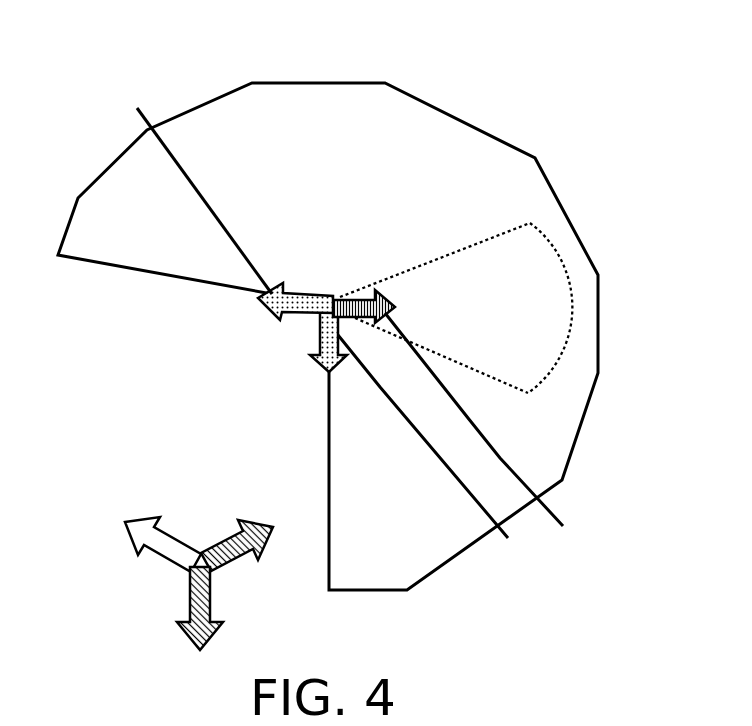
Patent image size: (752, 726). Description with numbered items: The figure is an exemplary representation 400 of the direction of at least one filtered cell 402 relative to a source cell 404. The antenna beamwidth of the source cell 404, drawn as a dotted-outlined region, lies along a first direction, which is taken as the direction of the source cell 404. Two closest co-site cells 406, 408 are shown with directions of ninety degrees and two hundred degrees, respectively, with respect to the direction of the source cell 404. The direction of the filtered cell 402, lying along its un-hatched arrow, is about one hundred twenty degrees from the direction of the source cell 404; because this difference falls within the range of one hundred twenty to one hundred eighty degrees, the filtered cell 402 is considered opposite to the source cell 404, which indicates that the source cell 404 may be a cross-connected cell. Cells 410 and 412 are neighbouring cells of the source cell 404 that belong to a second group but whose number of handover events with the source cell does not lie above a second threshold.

The exemplary representation 400 is at (582, 60).
The filtered cell 402 is at (160, 545).
The source cell 404 is at (563, 526).
The closest co-site cell 406 is at (508, 538).
The closest co-site cell 408 is at (137, 108).
The neighbouring cell 410 is at (233, 533).
The neighbouring cell 412 is at (203, 600).